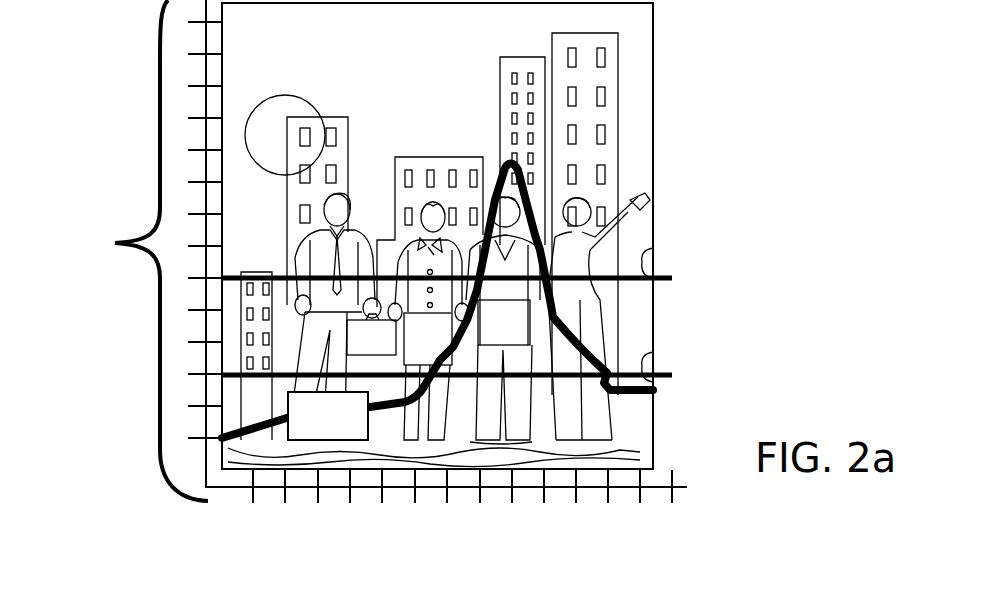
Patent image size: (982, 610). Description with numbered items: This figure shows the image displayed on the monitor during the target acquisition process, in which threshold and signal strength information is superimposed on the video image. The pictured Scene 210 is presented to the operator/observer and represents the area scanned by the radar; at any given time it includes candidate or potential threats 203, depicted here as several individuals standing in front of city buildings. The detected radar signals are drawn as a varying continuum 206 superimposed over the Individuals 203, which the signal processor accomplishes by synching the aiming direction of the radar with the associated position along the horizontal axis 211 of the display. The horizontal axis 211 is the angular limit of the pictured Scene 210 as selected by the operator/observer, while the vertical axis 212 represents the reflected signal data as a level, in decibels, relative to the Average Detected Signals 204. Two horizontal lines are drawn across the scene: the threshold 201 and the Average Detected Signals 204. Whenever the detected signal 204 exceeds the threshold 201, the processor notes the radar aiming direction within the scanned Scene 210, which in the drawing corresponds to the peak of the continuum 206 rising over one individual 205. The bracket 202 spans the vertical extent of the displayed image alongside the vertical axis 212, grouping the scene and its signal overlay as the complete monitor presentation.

The threshold 201 is at (660, 278).
The image frame / image region 202 is at (132, 250).
The candidate or potential threats 203 is at (568, 197).
The average detected signals 204 is at (660, 375).
The selected person / object of interest 205 is at (512, 348).
The varying continuum of detected signals 206 is at (328, 416).
The pictured scene 210 is at (320, 57).
The horizontal axis 211 is at (362, 488).
The vertical axis 212 is at (195, 148).